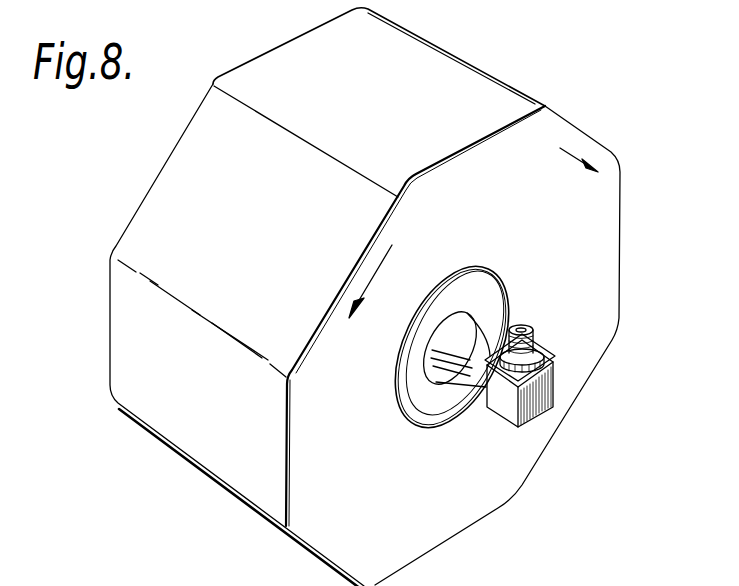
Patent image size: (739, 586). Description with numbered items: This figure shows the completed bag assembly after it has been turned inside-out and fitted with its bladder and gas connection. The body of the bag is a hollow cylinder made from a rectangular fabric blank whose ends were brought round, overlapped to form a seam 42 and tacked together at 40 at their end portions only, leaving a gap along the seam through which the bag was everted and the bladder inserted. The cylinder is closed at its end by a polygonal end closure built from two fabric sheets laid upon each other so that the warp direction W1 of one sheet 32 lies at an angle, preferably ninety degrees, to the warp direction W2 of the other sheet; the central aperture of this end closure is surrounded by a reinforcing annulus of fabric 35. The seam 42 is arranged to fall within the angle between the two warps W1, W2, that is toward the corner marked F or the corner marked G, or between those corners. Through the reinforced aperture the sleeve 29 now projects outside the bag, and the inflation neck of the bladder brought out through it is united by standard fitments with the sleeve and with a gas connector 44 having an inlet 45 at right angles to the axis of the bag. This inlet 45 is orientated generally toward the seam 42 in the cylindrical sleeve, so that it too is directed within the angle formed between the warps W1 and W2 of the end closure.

The sleeve 29 is at (453, 368).
The sheet 32 is at (581, 263).
The reinforcing annulus of fabric 35 is at (490, 304).
The tacking 40 is at (264, 86).
The seam 42 is at (314, 133).
The gas connector 44 is at (509, 404).
The inlet 45 is at (530, 328).
The warp direction W1 is at (577, 147).
The warp direction W2 is at (370, 278).
The corner F is at (410, 202).
The corner G is at (537, 135).